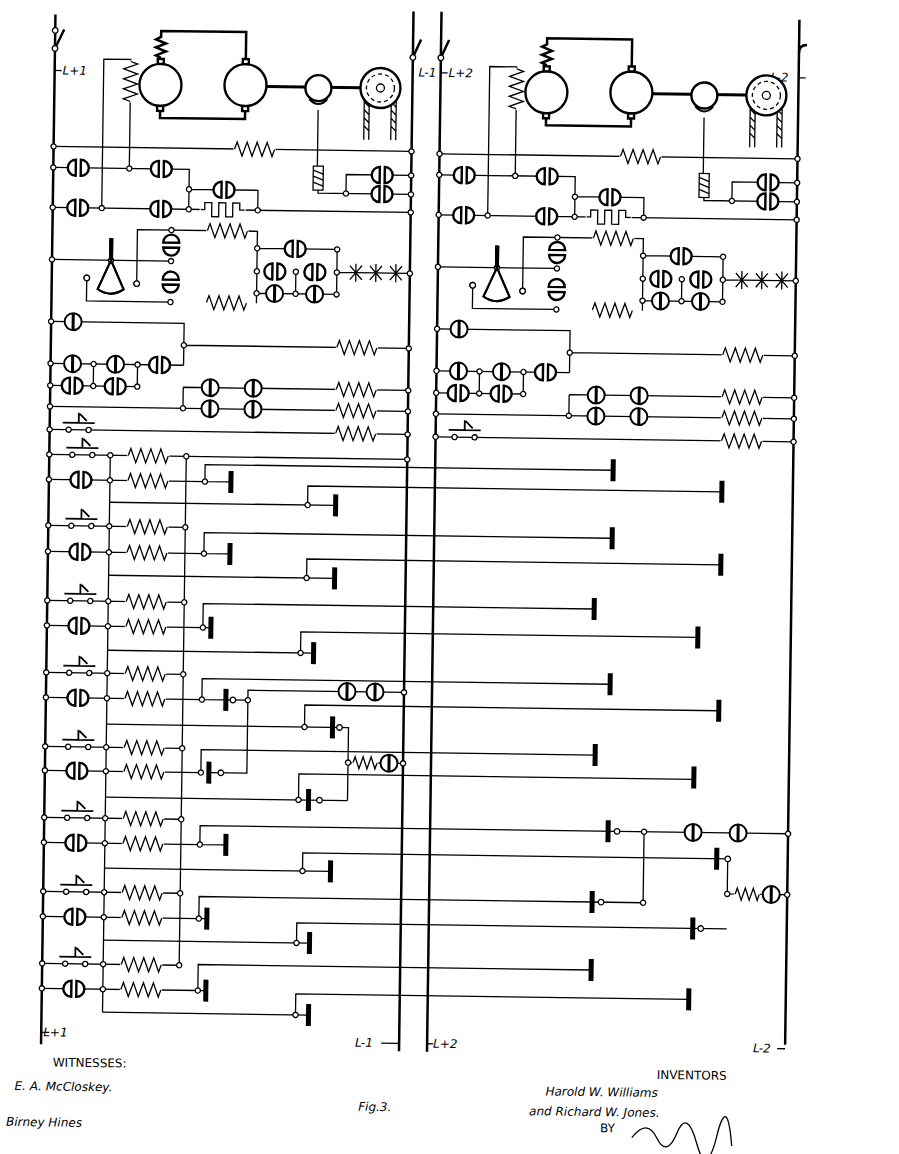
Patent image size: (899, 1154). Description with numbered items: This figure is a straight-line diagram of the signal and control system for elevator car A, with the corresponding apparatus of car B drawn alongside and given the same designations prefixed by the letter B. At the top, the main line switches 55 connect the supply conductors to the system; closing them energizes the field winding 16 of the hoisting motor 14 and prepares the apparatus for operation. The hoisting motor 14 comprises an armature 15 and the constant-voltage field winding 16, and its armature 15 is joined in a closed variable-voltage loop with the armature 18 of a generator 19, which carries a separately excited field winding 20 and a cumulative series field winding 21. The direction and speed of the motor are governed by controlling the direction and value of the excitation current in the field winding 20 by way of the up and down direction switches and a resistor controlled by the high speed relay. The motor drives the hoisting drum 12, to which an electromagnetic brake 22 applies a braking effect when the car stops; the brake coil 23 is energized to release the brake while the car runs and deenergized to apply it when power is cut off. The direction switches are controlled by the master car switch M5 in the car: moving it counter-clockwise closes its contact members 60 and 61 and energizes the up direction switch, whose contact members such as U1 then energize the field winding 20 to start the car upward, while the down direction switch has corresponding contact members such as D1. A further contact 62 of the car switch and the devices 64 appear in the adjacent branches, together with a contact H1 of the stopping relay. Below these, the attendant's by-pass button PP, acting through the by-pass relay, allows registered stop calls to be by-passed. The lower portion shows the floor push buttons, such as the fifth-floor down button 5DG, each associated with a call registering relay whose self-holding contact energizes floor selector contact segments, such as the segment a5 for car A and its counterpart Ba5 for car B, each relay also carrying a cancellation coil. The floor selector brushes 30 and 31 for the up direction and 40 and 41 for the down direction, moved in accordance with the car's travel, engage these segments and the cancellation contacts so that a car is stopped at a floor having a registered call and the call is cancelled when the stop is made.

The main line switches 55 is at (56, 38).
The generator 19 is at (136, 52).
The cumulative series field winding 21 is at (160, 47).
The armature 18 is at (170, 73).
The armature 15 is at (240, 83).
The hoisting motor 14 is at (282, 62).
The hoisting drum 12 is at (378, 72).
The electromagnetic brake 22 is at (317, 106).
The separately excited field winding 20 is at (124, 90).
The field winding 16 is at (262, 148).
The brake coil 23 is at (319, 178).
The contact 62 is at (74, 271).
The contact member 61 is at (147, 274).
The contact member 60 is at (125, 282).
The lamps 64 is at (376, 265).
The brush 30 is at (235, 688).
The brush 31 is at (349, 719).
The brush 40 is at (226, 783).
The brush 41 is at (328, 810).
The contact members U1 is at (76, 162).
The contact members D1 is at (161, 163).
The master car switch M5 is at (101, 241).
The contact members H1 is at (68, 317).
The by-pass button PP is at (86, 422).
The floor push button 5DG is at (181, 448).
The battery a5 is at (242, 482).
The battery Ba5 is at (629, 470).